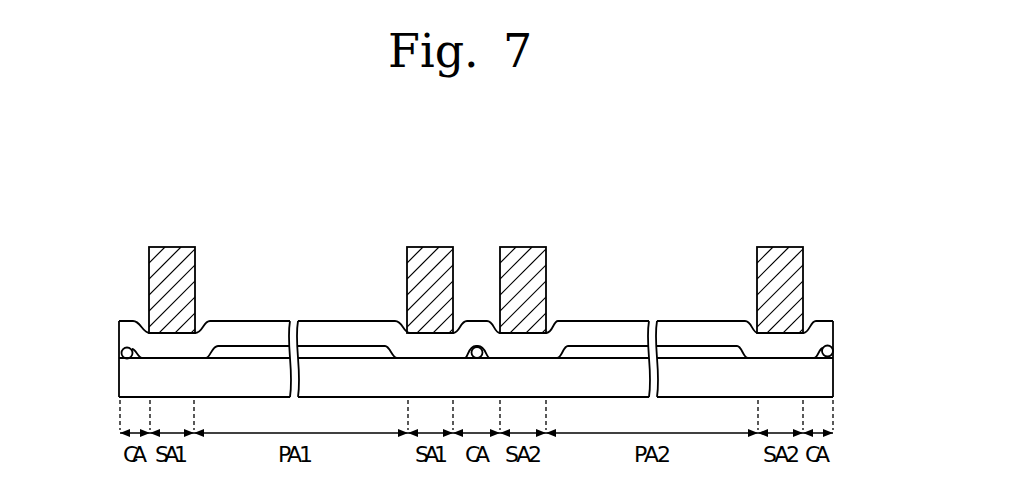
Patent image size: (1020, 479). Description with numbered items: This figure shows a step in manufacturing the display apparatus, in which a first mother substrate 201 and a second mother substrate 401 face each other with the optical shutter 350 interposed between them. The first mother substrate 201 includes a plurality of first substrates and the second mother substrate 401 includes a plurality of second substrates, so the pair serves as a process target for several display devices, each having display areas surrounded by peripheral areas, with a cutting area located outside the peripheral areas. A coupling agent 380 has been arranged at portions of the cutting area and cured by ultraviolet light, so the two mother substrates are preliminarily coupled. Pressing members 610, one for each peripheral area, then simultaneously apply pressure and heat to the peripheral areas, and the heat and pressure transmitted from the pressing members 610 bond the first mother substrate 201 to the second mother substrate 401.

The first mother substrate 201 is at (825, 377).
The optical shutter 350 is at (692, 348).
The coupling agent 380 is at (121, 352).
The second mother substrate 401 is at (833, 332).
The pressing member 610 is at (172, 253).